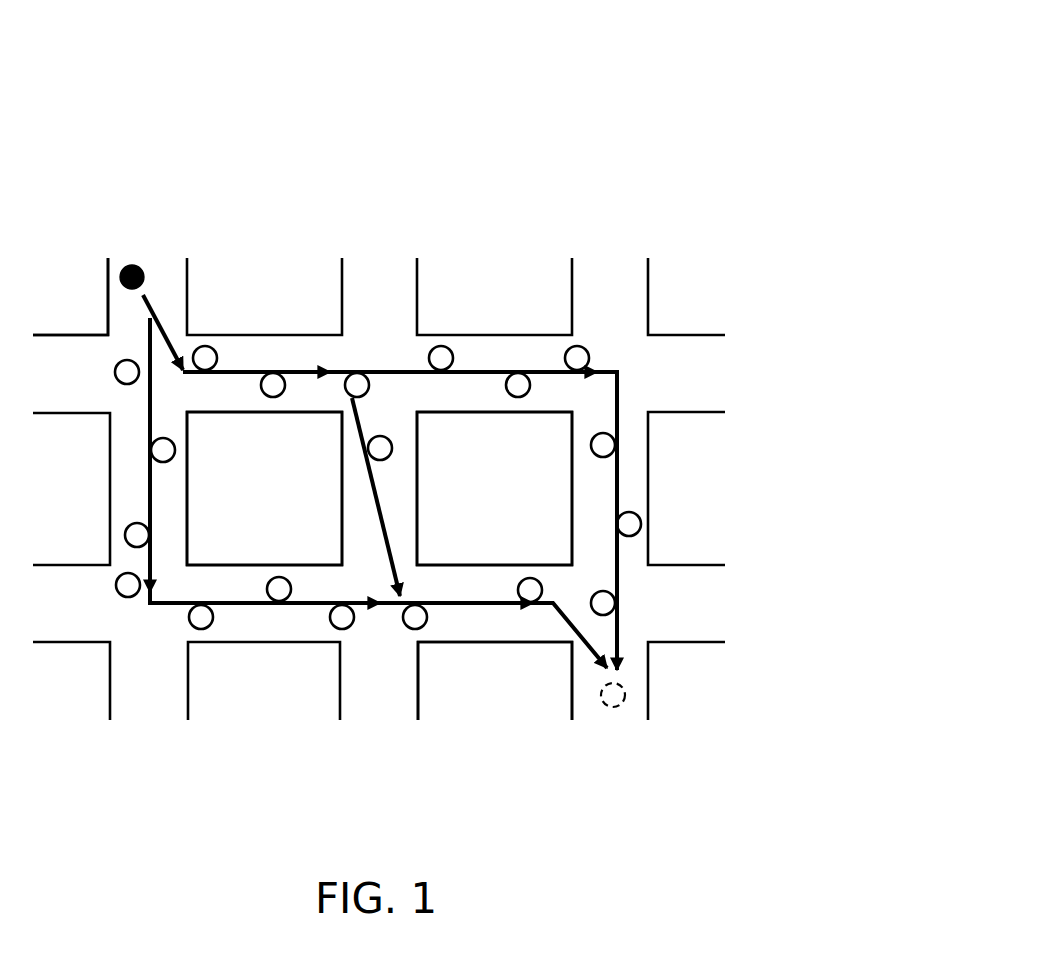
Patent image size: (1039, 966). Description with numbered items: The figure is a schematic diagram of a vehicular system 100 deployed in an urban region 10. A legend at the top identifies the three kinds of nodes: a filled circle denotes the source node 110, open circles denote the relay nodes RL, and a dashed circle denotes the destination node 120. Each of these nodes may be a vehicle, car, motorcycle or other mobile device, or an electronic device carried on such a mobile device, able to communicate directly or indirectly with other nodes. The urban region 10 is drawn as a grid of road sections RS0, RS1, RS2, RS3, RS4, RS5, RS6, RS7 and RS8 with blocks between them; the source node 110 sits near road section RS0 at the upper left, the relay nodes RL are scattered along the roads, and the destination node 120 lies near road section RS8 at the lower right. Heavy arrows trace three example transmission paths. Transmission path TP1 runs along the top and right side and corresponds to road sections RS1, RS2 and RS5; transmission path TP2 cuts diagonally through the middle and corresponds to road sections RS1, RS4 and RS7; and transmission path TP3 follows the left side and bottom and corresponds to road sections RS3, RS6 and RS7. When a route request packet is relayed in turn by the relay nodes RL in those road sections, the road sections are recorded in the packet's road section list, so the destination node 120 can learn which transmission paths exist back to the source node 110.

The urban region 10 is at (715, 213).
The vehicular system 100 is at (660, 0).
The source node 110 is at (588, 5).
The relay nodes RL is at (588, 60).
The destination node 120 is at (588, 118).
The road section RS0 is at (97, 183).
The road section RS1 is at (338, 320).
The road section RS2 is at (568, 320).
The road section RS3 is at (97, 413).
The road section RS4 is at (335, 564).
The road section RS5 is at (565, 564).
The road section RS6 is at (338, 552).
The road section RS7 is at (568, 552).
The road section RS8 is at (558, 642).
The transmission path TP1 is at (627, 382).
The transmission path TP2 is at (357, 416).
The transmission path TP3 is at (167, 608).